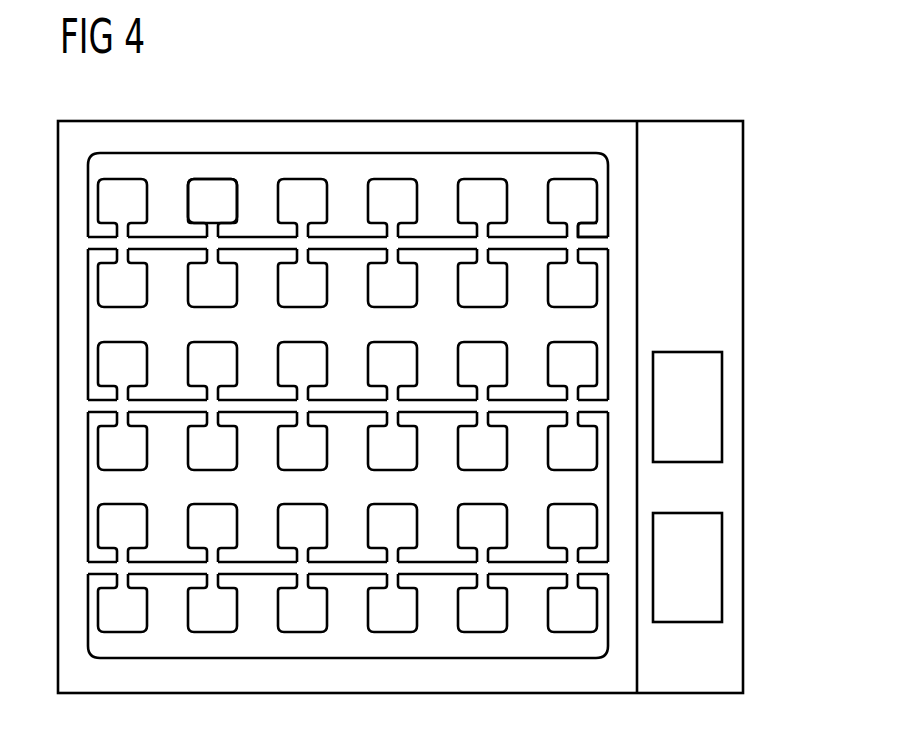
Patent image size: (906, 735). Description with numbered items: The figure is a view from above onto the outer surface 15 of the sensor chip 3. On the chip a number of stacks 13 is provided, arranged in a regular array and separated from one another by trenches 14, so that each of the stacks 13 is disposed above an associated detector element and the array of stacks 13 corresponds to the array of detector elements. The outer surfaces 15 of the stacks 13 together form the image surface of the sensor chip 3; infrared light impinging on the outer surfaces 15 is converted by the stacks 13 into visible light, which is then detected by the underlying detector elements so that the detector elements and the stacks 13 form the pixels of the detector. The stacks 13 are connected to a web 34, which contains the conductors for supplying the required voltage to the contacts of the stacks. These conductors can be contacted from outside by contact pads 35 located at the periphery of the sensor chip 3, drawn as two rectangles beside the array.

The sensor chip 3 is at (596, 95).
The stacks 13 is at (304, 170).
The trenches 14 is at (440, 197).
The outer surfaces 15 is at (221, 185).
The web 34 is at (598, 240).
The contact pads 35 is at (686, 352).